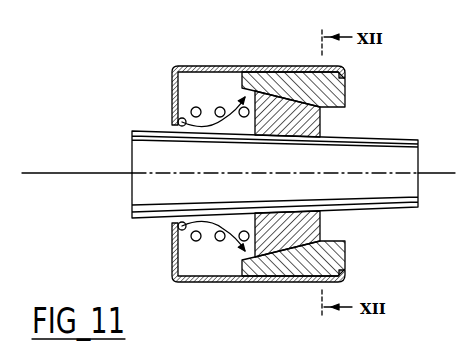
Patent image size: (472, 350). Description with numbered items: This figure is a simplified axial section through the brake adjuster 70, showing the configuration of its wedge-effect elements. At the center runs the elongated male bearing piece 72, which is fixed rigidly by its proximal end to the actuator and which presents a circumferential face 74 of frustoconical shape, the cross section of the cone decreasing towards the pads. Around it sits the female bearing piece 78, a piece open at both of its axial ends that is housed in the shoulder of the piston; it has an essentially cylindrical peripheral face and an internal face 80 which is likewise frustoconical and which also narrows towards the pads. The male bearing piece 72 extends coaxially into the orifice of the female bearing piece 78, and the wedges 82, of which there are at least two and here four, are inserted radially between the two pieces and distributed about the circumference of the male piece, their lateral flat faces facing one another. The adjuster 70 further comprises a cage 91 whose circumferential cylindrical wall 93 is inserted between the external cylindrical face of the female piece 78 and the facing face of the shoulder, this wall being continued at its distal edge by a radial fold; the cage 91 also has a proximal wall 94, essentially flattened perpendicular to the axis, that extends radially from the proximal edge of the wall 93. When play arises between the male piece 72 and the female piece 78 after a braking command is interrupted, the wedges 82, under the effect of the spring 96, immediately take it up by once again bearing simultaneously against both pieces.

The adjuster 70 is at (347, 85).
The male bearing piece 72 is at (160, 155).
The circumferential face 74 is at (400, 134).
The female bearing piece 78 is at (281, 86).
The internal face 80 is at (181, 116).
The wedges 82 is at (320, 118).
The cage 91 is at (215, 282).
The circumferential cylindrical wall 93 is at (242, 283).
The proximal wall 94 is at (178, 250).
The spring 96 is at (216, 107).